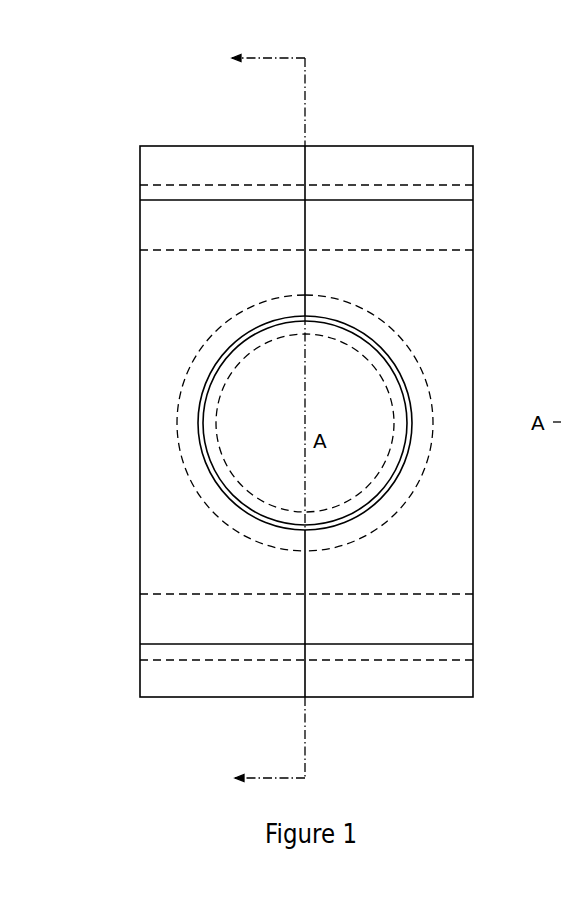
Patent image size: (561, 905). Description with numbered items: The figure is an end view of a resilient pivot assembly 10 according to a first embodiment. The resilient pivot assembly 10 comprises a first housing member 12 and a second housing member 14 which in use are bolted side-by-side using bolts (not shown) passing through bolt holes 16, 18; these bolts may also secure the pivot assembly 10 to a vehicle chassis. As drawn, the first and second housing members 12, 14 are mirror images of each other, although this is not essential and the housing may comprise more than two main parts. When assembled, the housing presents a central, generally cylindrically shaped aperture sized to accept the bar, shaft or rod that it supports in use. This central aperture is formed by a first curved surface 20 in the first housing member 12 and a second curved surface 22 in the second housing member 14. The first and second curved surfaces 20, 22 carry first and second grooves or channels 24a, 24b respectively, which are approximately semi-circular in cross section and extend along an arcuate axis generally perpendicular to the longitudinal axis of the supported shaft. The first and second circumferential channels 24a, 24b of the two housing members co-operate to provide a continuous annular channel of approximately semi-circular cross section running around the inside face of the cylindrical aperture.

The resilient pivot assembly 10 is at (87, 172).
The first housing member 12 is at (163, 572).
The second housing member 14 is at (432, 290).
The bolt hole 16 is at (306, 217).
The bolt hole 18 is at (306, 627).
The first curved surface 20 is at (203, 410).
The second curved surface 22 is at (405, 383).
The first groove/channel 24a is at (187, 400).
The second groove/channel 24b is at (425, 393).